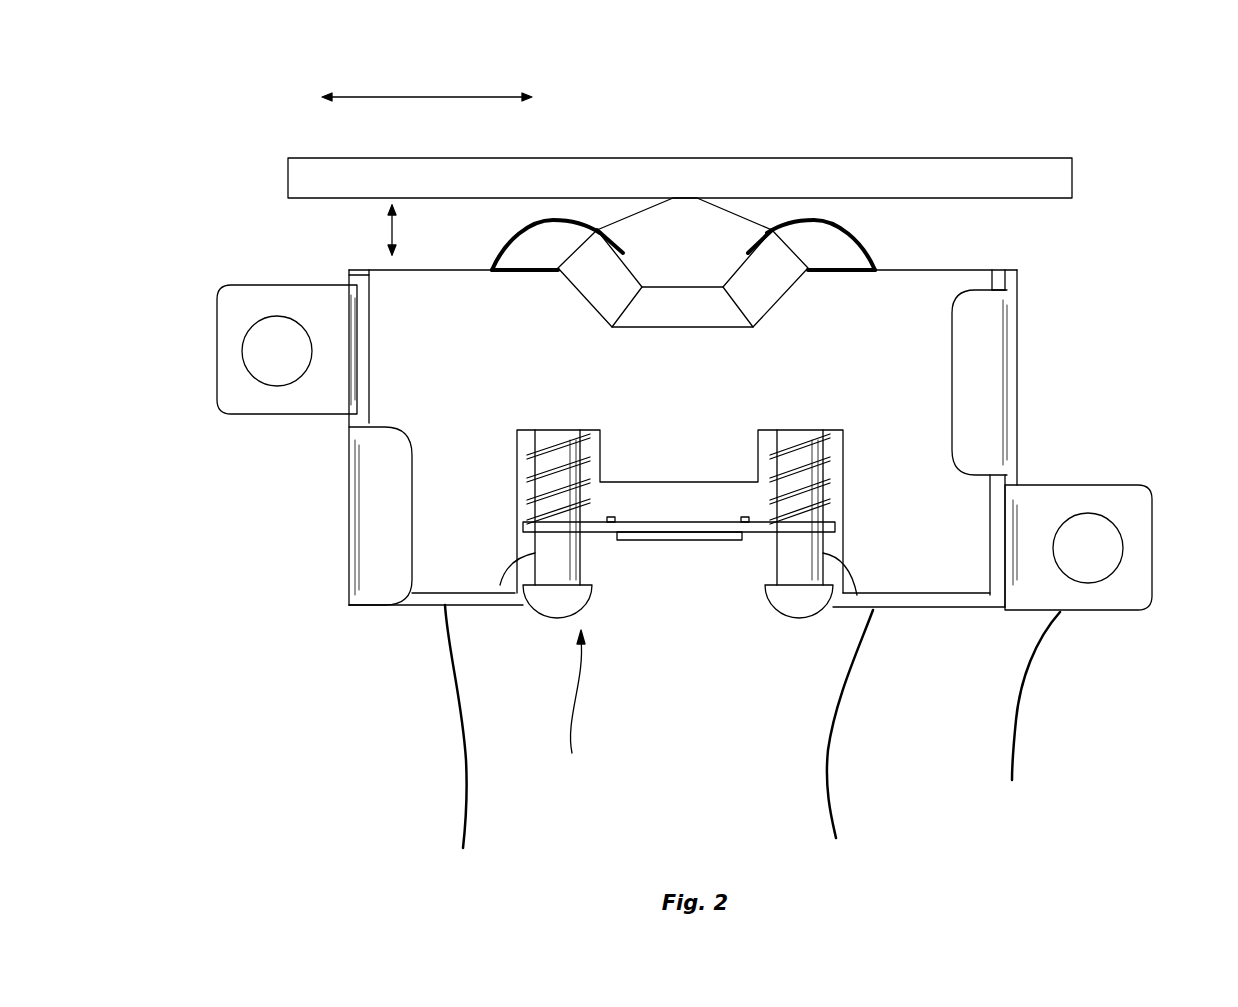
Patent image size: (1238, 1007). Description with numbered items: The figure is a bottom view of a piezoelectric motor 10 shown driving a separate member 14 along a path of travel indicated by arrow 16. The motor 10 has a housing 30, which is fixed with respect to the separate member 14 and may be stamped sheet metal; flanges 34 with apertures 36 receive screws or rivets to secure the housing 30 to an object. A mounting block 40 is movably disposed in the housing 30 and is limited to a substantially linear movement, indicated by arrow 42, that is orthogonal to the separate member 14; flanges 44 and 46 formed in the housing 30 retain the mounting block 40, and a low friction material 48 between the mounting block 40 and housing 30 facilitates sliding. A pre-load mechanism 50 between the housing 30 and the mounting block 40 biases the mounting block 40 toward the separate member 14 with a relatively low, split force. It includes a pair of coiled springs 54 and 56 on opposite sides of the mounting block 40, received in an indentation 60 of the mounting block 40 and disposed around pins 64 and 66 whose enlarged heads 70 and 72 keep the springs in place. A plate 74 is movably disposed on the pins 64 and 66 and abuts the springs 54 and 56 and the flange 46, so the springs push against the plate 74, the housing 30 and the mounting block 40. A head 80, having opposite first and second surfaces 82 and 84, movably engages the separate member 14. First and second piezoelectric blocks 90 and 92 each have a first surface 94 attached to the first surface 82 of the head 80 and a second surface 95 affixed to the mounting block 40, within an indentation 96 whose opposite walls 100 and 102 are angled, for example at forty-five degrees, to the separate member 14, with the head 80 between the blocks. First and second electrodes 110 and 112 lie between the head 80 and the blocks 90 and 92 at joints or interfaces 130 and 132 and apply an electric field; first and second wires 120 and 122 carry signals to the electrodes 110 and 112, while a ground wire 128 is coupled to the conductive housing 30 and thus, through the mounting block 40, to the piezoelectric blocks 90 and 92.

The piezoelectric motor 10 is at (315, 460).
The separate member 14 is at (893, 158).
The arrow indicating path of travel 16 is at (420, 96).
The housing 30 is at (347, 543).
The flanges 34 is at (1105, 483).
The apertures 36 is at (1123, 542).
The mounting block 40 is at (922, 548).
The arrow indicating linear movement direction 42 is at (388, 230).
The flange 44 is at (983, 383).
The flange 46 is at (690, 541).
The low friction material 48 is at (995, 585).
The pre-load mechanism 50 is at (569, 705).
The coiled spring 54 is at (593, 522).
The coiled spring 56 is at (765, 570).
The indentation 60 is at (653, 482).
The pin 64 is at (500, 585).
The pin 66 is at (857, 595).
The enlarged head 70 is at (558, 620).
The enlarged head 72 is at (797, 620).
The plate 74 is at (732, 542).
The head 80 is at (682, 230).
The first surface of head 82 is at (812, 266).
The second surface of head 84 is at (645, 275).
The first piezoelectric block 90 is at (765, 278).
The second piezoelectric block 92 is at (600, 278).
The first surface of piezoelectric block 94 is at (712, 280).
The second surface of piezoelectric block 95 is at (595, 303).
The indentation 96 is at (653, 328).
The first wall 100 is at (793, 283).
The second wall 102 is at (563, 283).
The first electrode 110 is at (767, 227).
The second electrode 112 is at (603, 227).
The first wire 120 is at (833, 772).
The second wire 122 is at (457, 692).
The ground wire 128 is at (1023, 690).
The first joint or interface 130 is at (712, 281).
The second joint or interface 132 is at (632, 281).